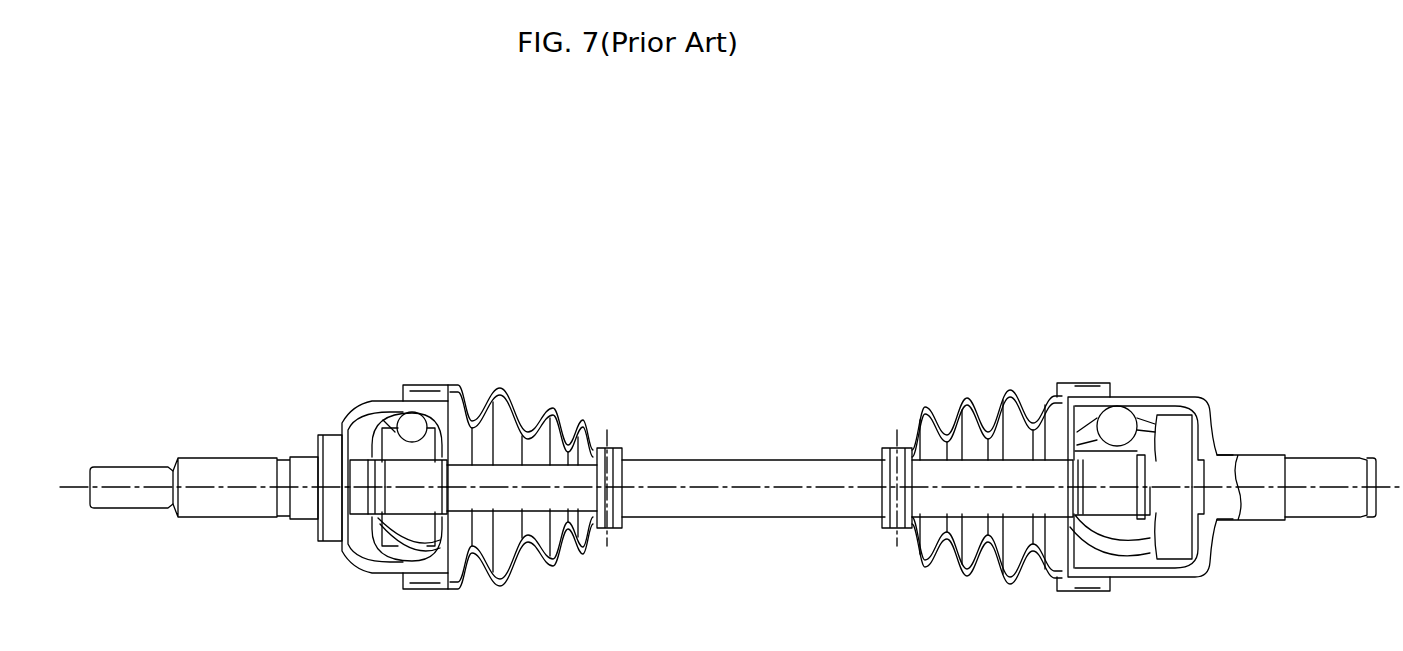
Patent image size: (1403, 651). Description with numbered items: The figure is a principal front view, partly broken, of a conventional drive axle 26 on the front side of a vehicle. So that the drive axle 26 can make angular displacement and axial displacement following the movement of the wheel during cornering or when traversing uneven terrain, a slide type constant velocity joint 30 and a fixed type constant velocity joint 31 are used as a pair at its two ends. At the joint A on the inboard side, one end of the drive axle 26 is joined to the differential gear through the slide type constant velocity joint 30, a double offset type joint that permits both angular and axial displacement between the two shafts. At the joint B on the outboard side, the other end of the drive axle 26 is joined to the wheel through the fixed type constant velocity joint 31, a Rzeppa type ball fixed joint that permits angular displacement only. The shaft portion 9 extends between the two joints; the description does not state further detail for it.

The intermediate shaft 9 is at (699, 460).
The drive axle 26 is at (762, 445).
The slide type constant velocity joint 30 is at (1136, 381).
The fixed type constant velocity joint 31 is at (404, 385).
The joint A is at (1229, 362).
The joint B is at (302, 381).